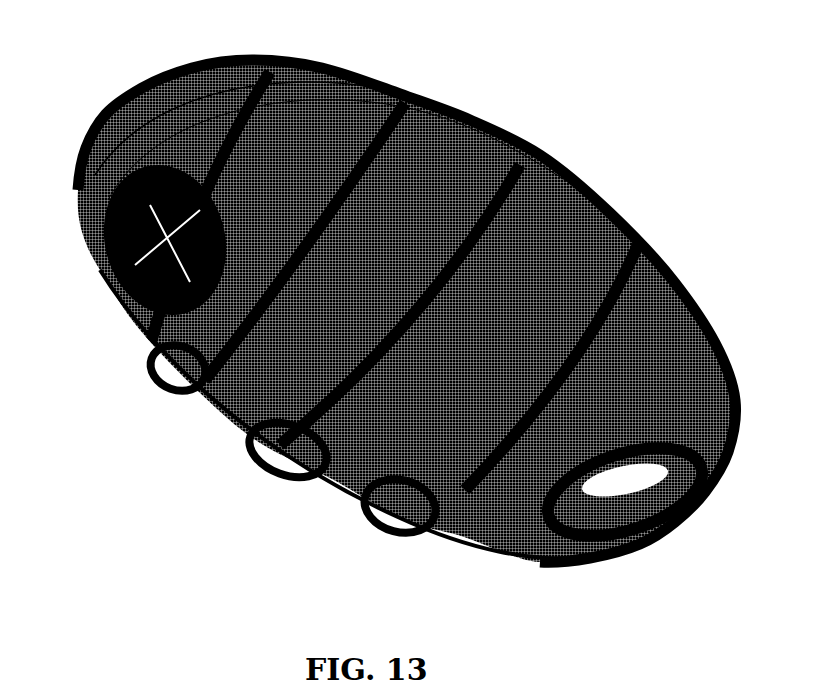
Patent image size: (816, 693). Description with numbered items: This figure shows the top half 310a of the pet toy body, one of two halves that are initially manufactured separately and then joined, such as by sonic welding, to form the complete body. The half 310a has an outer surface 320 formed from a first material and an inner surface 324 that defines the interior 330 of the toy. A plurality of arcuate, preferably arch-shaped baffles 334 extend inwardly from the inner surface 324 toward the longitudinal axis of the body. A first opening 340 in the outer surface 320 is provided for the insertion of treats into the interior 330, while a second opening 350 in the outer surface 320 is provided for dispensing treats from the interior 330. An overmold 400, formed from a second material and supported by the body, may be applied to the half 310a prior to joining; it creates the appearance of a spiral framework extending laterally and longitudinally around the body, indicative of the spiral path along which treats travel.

The body half 310a is at (601, 97).
The outer surface 320 is at (458, 547).
The inner surface 324 is at (325, 135).
The interior 330 is at (182, 66).
The baffles 334 is at (455, 247).
The first opening 340 is at (107, 281).
The second opening 350 is at (638, 540).
The overmold 400 is at (253, 463).